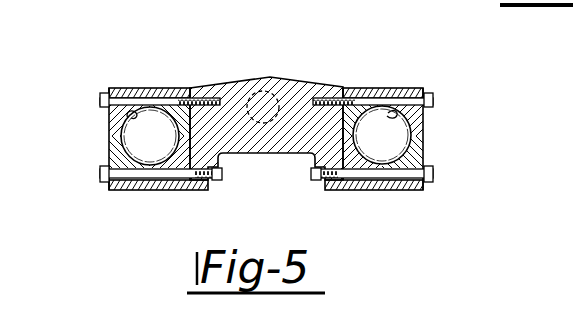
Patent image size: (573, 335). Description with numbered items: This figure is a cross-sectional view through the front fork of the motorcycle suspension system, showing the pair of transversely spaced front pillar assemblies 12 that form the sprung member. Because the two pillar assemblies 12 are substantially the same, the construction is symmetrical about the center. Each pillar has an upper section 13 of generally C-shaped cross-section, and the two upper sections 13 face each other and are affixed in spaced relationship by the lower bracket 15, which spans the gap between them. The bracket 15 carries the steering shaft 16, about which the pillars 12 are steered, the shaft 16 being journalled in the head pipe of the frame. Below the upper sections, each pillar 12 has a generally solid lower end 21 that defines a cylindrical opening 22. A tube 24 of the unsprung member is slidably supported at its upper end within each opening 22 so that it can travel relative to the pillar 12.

The front pillar assembly 12 is at (146, 87).
The upper section 13 is at (108, 133).
The lower bracket 15 is at (290, 80).
The steering shaft 16 is at (258, 90).
The lower end 21 is at (108, 162).
The cylindrical opening 22 is at (130, 117).
The tube 24 is at (155, 161).